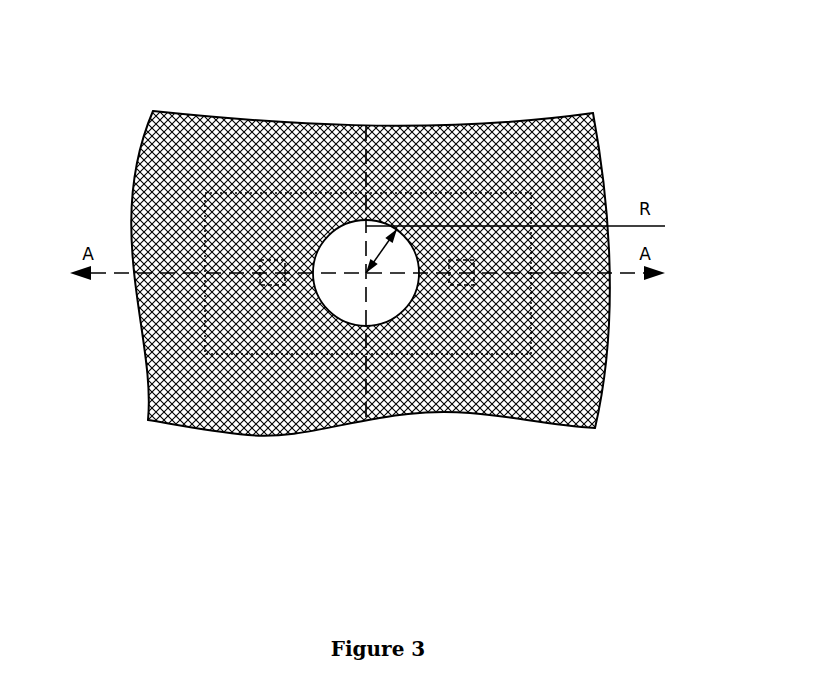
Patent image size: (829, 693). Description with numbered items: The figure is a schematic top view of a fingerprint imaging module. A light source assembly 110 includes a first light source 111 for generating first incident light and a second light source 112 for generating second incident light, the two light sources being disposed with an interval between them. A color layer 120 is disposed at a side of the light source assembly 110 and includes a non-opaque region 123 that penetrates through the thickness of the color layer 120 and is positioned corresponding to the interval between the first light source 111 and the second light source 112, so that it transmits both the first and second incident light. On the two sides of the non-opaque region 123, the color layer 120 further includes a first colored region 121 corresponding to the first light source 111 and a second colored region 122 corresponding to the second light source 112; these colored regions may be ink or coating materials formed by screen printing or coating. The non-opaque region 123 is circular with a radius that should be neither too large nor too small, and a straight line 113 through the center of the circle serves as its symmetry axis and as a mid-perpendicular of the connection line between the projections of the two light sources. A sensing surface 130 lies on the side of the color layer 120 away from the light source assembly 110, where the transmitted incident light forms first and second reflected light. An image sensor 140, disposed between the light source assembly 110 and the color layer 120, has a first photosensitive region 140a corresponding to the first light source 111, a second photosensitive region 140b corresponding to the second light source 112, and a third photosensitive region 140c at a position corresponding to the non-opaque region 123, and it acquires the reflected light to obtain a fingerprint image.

The light source assembly 110 is at (495, 326).
The first light source 111 is at (260, 272).
The second light source 112 is at (452, 269).
The straight line 113 is at (355, 228).
The color layer 120 is at (370, 225).
The first colored region 121 is at (246, 134).
The second colored region 122 is at (424, 136).
The non-opaque region 123 is at (346, 210).
The sensing surface 130 is at (556, 142).
The image sensor 140 is at (374, 422).
The first photosensitive region 140a is at (288, 350).
The second photosensitive region 140b is at (440, 410).
The third photosensitive region 140c is at (340, 326).